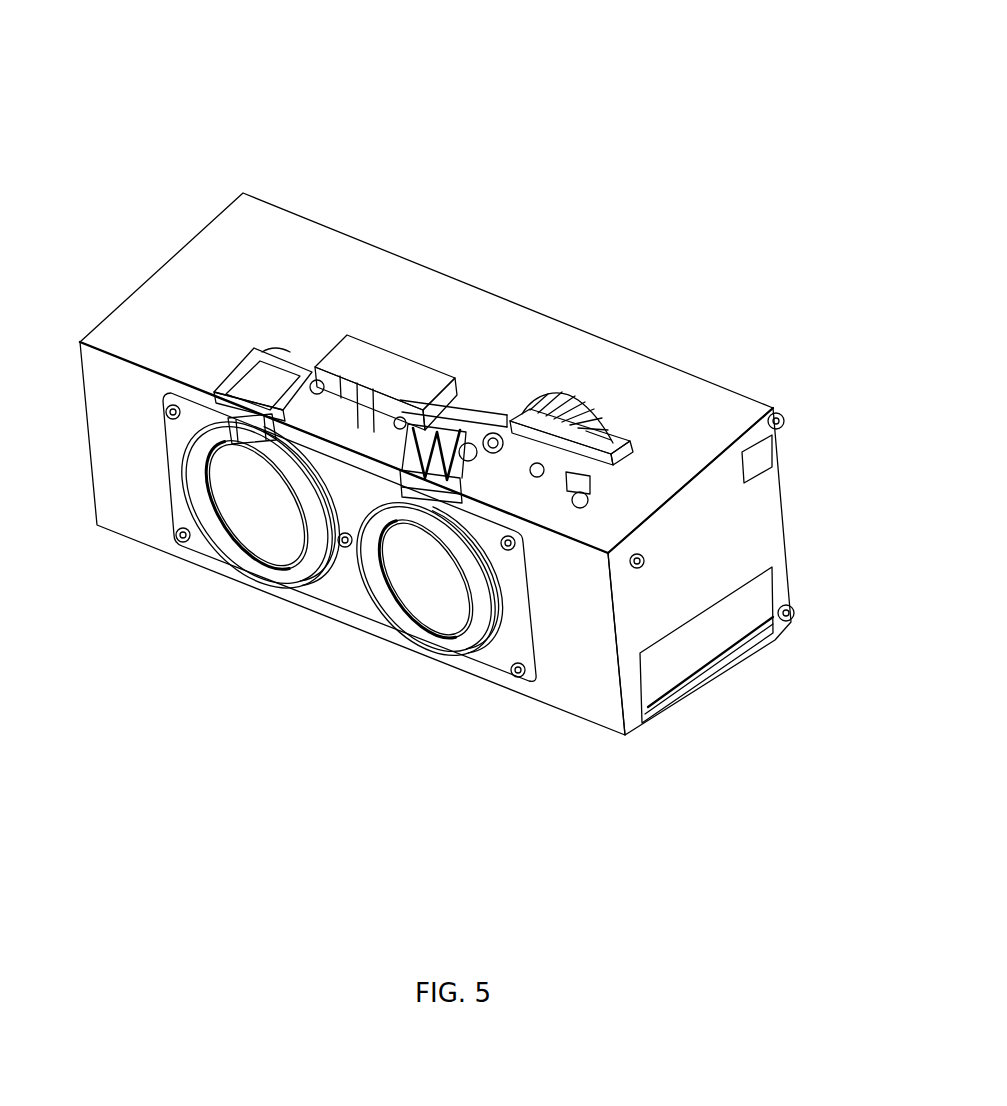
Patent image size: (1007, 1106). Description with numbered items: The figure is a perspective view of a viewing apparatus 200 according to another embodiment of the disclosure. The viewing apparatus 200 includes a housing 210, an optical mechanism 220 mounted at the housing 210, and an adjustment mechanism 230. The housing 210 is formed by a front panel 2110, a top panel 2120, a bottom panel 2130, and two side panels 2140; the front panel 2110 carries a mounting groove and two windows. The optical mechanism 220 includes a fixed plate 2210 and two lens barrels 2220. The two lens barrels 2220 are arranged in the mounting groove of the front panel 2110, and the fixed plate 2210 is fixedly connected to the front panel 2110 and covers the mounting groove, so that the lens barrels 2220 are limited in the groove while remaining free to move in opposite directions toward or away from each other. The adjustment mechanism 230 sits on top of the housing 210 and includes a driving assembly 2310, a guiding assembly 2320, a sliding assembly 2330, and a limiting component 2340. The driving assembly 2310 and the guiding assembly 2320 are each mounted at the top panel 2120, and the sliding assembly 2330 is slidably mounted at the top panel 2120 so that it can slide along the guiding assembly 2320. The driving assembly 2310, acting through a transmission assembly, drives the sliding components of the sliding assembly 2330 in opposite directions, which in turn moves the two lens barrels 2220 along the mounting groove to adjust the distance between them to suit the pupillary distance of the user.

The viewing apparatus 200 is at (443, 62).
The housing 210 is at (618, 810).
The front panel 2110 is at (588, 702).
The top panel 2120 is at (697, 423).
The bottom panel 2130 is at (663, 698).
The side panels 2140 is at (695, 592).
The optical mechanism 220 is at (226, 657).
The fixed plate 2210 is at (350, 596).
The lens barrels 2220 is at (304, 588).
The adjustment mechanism 230 is at (423, 199).
The driving assembly 2310 is at (570, 394).
The guiding assembly 2320 is at (258, 347).
The sliding assembly 2330 is at (477, 400).
The limiting component 2340 is at (469, 375).